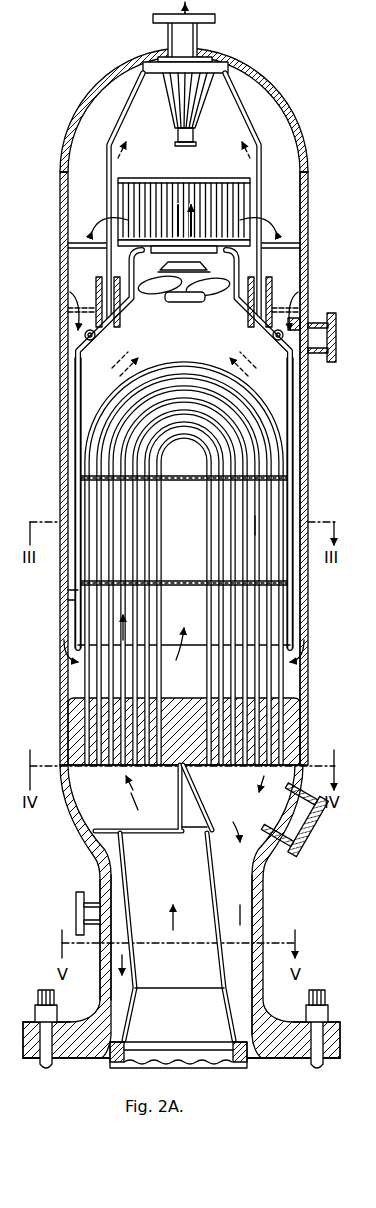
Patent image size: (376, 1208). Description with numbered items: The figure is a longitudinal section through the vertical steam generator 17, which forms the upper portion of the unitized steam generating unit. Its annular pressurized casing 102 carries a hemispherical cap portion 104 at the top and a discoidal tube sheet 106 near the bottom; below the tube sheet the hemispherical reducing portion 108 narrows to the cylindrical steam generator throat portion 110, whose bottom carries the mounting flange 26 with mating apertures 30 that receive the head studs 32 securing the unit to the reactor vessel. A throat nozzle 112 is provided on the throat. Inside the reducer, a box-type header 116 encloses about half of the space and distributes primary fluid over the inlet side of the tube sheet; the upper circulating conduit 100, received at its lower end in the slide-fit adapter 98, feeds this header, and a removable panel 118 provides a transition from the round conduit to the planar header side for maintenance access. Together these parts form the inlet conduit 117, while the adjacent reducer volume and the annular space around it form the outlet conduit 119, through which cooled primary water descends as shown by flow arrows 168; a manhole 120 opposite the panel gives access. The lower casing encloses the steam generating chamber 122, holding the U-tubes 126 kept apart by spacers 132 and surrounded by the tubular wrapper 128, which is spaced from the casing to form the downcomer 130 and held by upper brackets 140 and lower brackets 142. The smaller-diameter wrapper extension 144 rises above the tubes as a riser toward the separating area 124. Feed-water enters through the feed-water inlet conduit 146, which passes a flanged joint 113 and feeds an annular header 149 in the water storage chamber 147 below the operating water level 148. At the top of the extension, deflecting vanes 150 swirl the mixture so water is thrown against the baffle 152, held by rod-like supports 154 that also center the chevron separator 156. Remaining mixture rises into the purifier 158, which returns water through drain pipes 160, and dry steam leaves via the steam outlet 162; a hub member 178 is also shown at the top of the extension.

The steam generator 17 is at (336, 446).
The steam generator mounting flange 26 is at (337, 1055).
The mating apertures 30 is at (336, 1030).
The head studs 32 is at (324, 1003).
The slide-fit adapter 98 is at (254, 1056).
The upper circulating conduit 100 is at (209, 878).
The casing 102 is at (62, 341).
The cap portion 104 is at (118, 70).
The tube sheet 106 is at (60, 718).
The reducing portion 108 is at (72, 820).
The steam generator throat portion 110 is at (99, 869).
The throat nozzle 112 is at (86, 898).
The flanged joint 113 is at (329, 322).
The box-type header 116 is at (103, 832).
The inlet conduit 117 is at (206, 890).
The removable panel 118 is at (193, 789).
The outlet conduit 119 is at (247, 932).
The manhole 120 is at (307, 836).
The steam generating chamber 122 is at (196, 533).
The separating area 124 is at (198, 169).
The U-tubes 126 is at (204, 690).
The wrapper 128 is at (76, 393).
The downcomer 130 is at (70, 411).
The spacers 132 is at (196, 482).
The upper brackets 140 is at (74, 362).
The lower brackets 142 is at (70, 600).
The wrapper extension 144 is at (133, 318).
The feed-water inlet conduit 146 is at (291, 328).
The water storage chamber 147 is at (74, 321).
The operating water level 148 is at (64, 291).
The annular header 149 is at (70, 308).
The deflecting vanes 150 is at (220, 305).
The baffle 152 is at (126, 259).
The supports 154 is at (296, 242).
The chevron separator 156 is at (250, 199).
The purifier 158 is at (200, 118).
The drain pipes 160 is at (246, 122).
The steam outlet 162 is at (200, 34).
The flow arrows 168 is at (122, 967).
The hub plate 178 is at (243, 252).